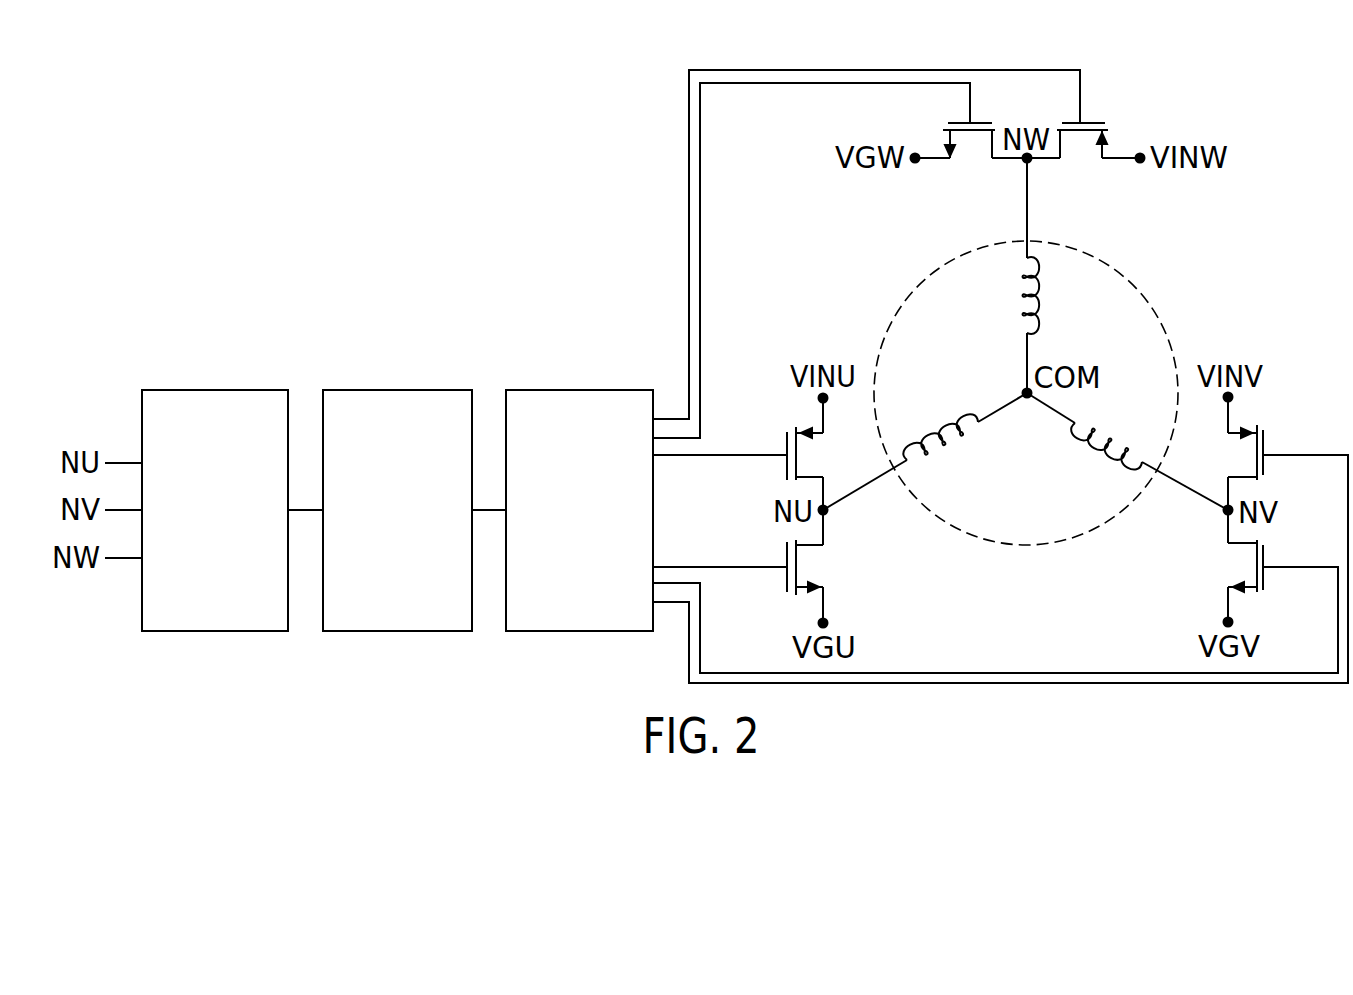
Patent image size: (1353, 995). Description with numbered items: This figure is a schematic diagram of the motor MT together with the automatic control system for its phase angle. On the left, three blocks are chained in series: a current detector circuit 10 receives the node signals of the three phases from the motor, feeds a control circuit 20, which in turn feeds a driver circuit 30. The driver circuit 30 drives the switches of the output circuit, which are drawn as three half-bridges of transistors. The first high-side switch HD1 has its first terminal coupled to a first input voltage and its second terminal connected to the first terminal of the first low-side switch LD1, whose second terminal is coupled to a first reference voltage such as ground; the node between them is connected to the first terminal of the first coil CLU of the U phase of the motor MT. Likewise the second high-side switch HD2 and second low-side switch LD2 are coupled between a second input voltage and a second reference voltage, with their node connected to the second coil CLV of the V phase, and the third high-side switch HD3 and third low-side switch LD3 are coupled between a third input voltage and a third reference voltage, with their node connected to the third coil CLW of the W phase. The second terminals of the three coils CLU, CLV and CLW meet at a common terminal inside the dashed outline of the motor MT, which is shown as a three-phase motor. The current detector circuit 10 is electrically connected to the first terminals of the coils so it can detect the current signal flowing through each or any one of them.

The current detector circuit 10 is at (215, 390).
The control circuit 20 is at (398, 390).
The driver circuit 30 is at (580, 390).
The motor MT is at (1153, 310).
The first coil CLU is at (925, 451).
The second coil CLV is at (1127, 451).
The third coil CLW is at (1064, 275).
The first high-side switch HD1 is at (774, 454).
The first low-side switch LD1 is at (774, 566).
The second high-side switch HD2 is at (1279, 453).
The second low-side switch LD2 is at (1278, 566).
The third high-side switch HD3 is at (1086, 125).
The third low-side switch LD3 is at (969, 125).